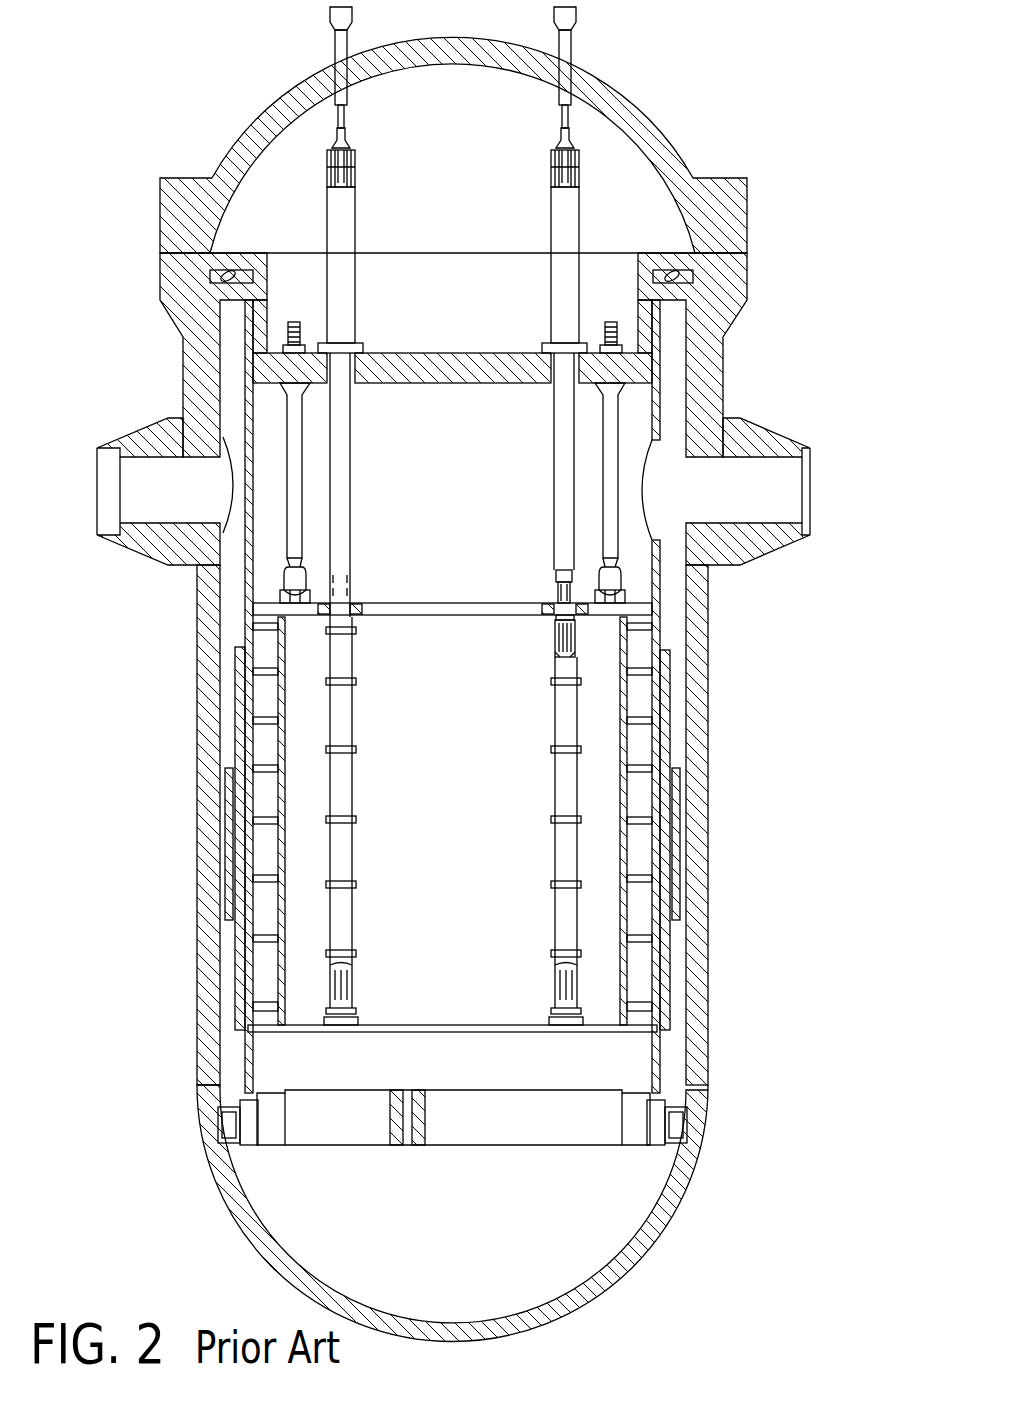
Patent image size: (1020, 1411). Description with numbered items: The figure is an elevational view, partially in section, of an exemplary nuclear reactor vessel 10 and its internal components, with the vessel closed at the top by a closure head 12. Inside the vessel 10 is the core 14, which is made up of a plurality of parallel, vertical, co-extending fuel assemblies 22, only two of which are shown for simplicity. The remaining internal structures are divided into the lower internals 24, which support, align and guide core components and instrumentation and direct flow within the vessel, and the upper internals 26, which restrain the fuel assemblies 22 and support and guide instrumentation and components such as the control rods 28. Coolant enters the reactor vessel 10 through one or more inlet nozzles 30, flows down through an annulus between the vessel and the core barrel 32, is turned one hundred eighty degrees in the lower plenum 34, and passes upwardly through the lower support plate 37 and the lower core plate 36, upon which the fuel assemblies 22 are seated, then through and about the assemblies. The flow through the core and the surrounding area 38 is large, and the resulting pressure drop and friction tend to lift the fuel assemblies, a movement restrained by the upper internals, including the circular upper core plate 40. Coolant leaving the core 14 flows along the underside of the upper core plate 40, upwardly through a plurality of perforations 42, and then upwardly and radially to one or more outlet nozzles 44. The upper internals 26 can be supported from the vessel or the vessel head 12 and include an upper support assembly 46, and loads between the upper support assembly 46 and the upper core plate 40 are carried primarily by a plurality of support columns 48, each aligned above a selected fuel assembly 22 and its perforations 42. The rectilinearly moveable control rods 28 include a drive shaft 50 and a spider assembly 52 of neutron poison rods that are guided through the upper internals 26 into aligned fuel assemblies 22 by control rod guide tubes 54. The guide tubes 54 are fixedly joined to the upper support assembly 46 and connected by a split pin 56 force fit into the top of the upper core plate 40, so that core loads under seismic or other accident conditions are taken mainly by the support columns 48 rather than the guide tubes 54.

The reactor vessel 10 is at (710, 712).
The closure head 12 is at (748, 214).
The core 14 is at (466, 806).
The fuel assemblies 22 is at (354, 717).
The lower internals 24 is at (466, 1070).
The upper internals 26 is at (468, 460).
The control rods 28 is at (557, 637).
The inlet nozzles 30 is at (137, 430).
The core barrel 32 is at (250, 600).
The lower plenum 34 is at (643, 1198).
The lower core plate 36 is at (523, 1025).
The lower support plate 37 is at (500, 1130).
The surrounding area 38 is at (510, 790).
The upper core plate 40 is at (497, 610).
The perforations 42 is at (405, 610).
The outlet nozzles 44 is at (770, 433).
The upper support assembly 46 is at (653, 255).
The support columns 48 is at (302, 490).
The drive shaft 50 is at (555, 575).
The spider assembly 52 is at (555, 602).
The control rod guide tubes 54 is at (356, 422).
The split pin 56 is at (573, 613).